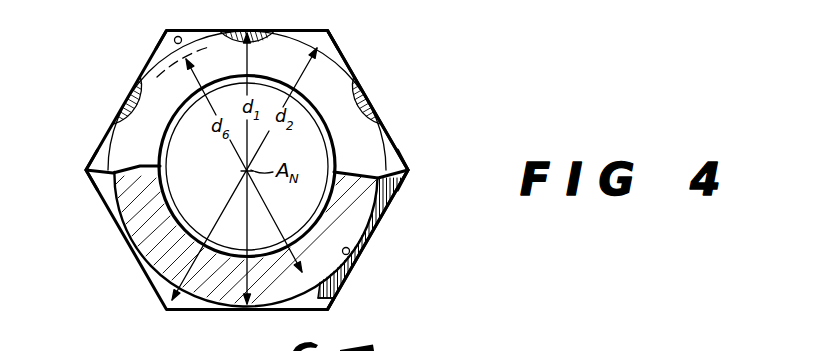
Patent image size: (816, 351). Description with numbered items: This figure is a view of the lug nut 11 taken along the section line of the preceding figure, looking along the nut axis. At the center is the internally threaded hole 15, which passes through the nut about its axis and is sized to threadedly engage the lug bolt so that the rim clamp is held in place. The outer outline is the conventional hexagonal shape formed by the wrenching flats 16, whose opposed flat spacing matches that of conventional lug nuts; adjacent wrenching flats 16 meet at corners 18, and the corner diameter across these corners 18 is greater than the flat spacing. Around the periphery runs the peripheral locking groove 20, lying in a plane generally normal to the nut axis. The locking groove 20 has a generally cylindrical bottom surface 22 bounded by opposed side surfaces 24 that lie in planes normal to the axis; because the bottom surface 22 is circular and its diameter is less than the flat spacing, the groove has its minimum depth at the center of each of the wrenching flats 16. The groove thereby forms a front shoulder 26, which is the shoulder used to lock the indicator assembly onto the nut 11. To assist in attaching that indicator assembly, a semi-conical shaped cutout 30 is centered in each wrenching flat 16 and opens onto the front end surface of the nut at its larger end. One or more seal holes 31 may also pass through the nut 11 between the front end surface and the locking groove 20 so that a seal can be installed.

The lug nut 11 is at (119, 235).
The internally threaded hole 15 is at (212, 181).
The wrenching flats 16 is at (397, 147).
The corners 18 is at (168, 30).
The peripheral locking groove 20 is at (340, 295).
The bottom surface 22 is at (350, 254).
The side surfaces 24 is at (377, 217).
The front shoulder 26 is at (328, 310).
The semi-conical shaped cutout 30 is at (266, 30).
The seal hole 31 is at (181, 37).